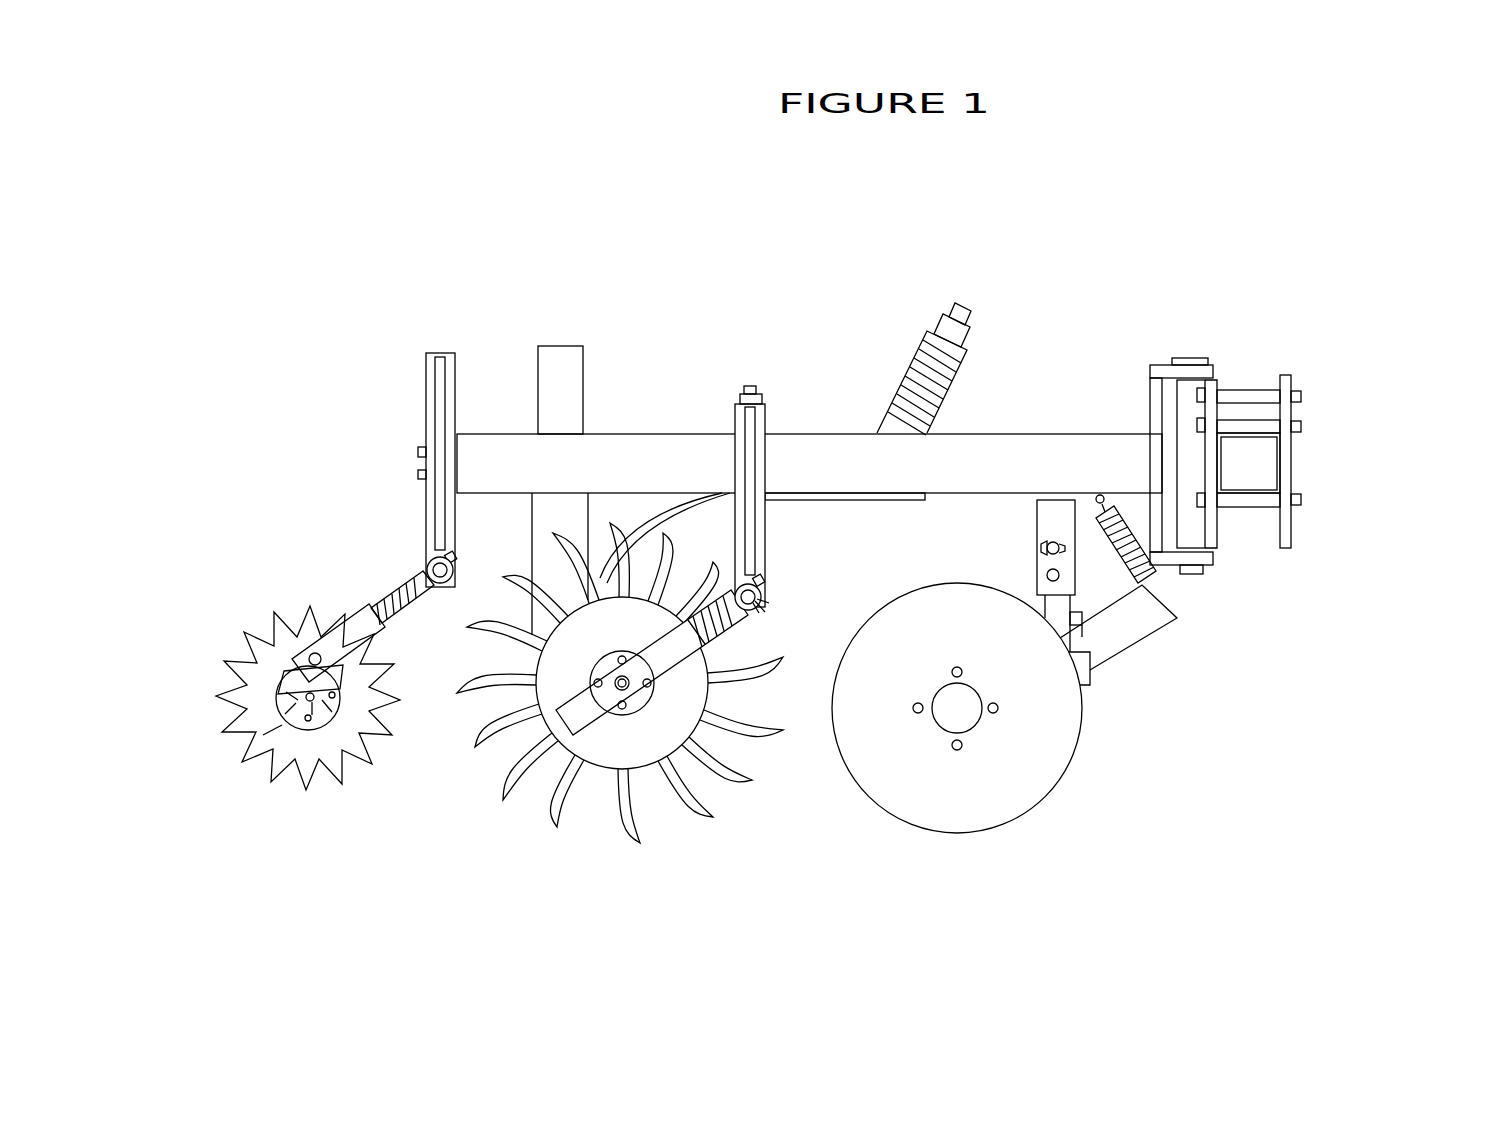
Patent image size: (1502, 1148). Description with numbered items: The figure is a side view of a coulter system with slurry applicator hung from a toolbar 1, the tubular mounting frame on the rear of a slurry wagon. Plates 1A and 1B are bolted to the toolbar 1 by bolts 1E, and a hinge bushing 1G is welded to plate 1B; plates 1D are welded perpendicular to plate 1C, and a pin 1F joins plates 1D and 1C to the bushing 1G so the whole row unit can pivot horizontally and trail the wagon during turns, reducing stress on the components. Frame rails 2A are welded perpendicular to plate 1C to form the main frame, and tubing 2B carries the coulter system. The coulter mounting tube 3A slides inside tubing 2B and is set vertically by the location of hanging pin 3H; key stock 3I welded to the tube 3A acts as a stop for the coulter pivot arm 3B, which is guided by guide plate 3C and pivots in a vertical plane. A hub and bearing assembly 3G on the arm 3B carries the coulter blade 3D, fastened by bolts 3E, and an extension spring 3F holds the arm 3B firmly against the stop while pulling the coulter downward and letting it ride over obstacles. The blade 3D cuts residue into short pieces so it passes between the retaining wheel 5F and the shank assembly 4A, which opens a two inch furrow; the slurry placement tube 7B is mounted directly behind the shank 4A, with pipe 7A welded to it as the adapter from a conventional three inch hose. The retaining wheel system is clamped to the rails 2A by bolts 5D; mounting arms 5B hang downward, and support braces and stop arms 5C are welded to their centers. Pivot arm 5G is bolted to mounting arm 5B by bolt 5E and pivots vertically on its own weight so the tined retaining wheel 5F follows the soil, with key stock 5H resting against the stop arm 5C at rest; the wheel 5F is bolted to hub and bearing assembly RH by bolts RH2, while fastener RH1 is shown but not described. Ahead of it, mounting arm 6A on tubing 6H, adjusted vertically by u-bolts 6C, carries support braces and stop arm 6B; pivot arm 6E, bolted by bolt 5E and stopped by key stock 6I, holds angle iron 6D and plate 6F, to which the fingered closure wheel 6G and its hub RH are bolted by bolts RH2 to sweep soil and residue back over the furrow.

The toolbar 1 is at (1248, 463).
The plate 1A is at (1289, 371).
The plate 1B is at (1219, 371).
The plate 1C is at (1146, 412).
The plates 1D is at (1165, 362).
The bolts 1E is at (1306, 406).
The pin 1F is at (1198, 353).
The hinge bushing 1G is at (1438, 528).
The frame rails 2A is at (1024, 427).
The tubing 2B is at (1034, 510).
The mounting tube 3A is at (1030, 598).
The coulter pivot arm 3B is at (1173, 634).
The guide plate 3C is at (1094, 683).
The coulter blade 3D is at (1079, 771).
The bolts 3E is at (955, 756).
The extension spring 3F is at (1151, 581).
The hub and bearing assembly 3G is at (986, 744).
The hanging pin 3H is at (1030, 544).
The key stock 3I is at (1083, 622).
The shank assembly 4A is at (940, 305).
The mounting arms 5B is at (776, 412).
The support braces and stop arms 5C is at (767, 548).
The bolts 5D is at (746, 384).
The bolt 5E is at (440, 586).
The retaining wheel 5F is at (605, 780).
The pivot arm 5G is at (680, 674).
The key stock 5H is at (765, 578).
The mounting arm 6A is at (416, 372).
The support braces and stop arm 6B is at (430, 423).
The u-bolts 6C is at (402, 468).
The angle iron 6D is at (293, 644).
The pivot arm 6E is at (424, 571).
The plate 6F is at (277, 692).
The closure wheel 6G is at (262, 738).
The tubing 6H is at (309, 659).
The key stock 6I is at (455, 553).
The pipe 7A is at (553, 344).
The slurry placement tube 7B is at (527, 537).
The hub and bearing assembly RH is at (577, 698).
The hub bolt holes RH1 is at (617, 718).
The bolts RH2 is at (676, 674).